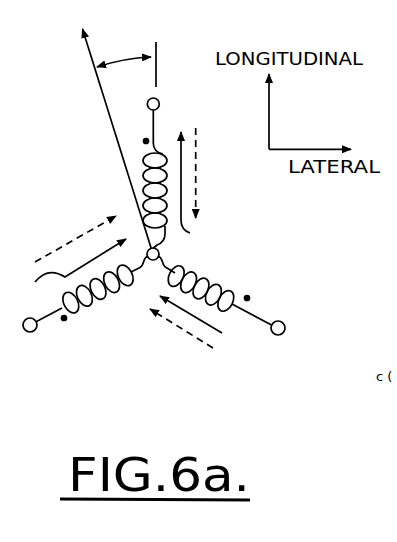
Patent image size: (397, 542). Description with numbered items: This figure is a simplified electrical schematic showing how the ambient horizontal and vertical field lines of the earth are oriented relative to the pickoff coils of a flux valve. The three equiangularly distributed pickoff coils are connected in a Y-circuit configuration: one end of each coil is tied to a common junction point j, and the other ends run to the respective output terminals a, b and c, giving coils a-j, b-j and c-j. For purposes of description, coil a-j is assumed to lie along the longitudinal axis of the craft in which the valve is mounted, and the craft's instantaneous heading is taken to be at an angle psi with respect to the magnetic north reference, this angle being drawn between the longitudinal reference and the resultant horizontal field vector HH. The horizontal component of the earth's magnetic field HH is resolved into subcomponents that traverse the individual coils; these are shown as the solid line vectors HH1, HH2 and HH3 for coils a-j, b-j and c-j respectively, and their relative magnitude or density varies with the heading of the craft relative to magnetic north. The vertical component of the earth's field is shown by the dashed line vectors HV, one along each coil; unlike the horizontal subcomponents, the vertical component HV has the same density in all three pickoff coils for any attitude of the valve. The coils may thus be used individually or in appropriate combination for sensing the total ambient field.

The output terminal a is at (159, 172).
The output terminal b is at (221, 295).
The output terminal c is at (77, 294).
The junction point j is at (153, 267).
The horizontal component of the earth's magnetic field HH is at (103, 138).
The horizontal field subcomponent HH1 is at (187, 191).
The horizontal field subcomponent HH2 is at (205, 319).
The horizontal field subcomponent HH3 is at (71, 270).
The vertical component of the earth's magnetic field HV is at (128, 246).
The heading angle psi is at (126, 62).